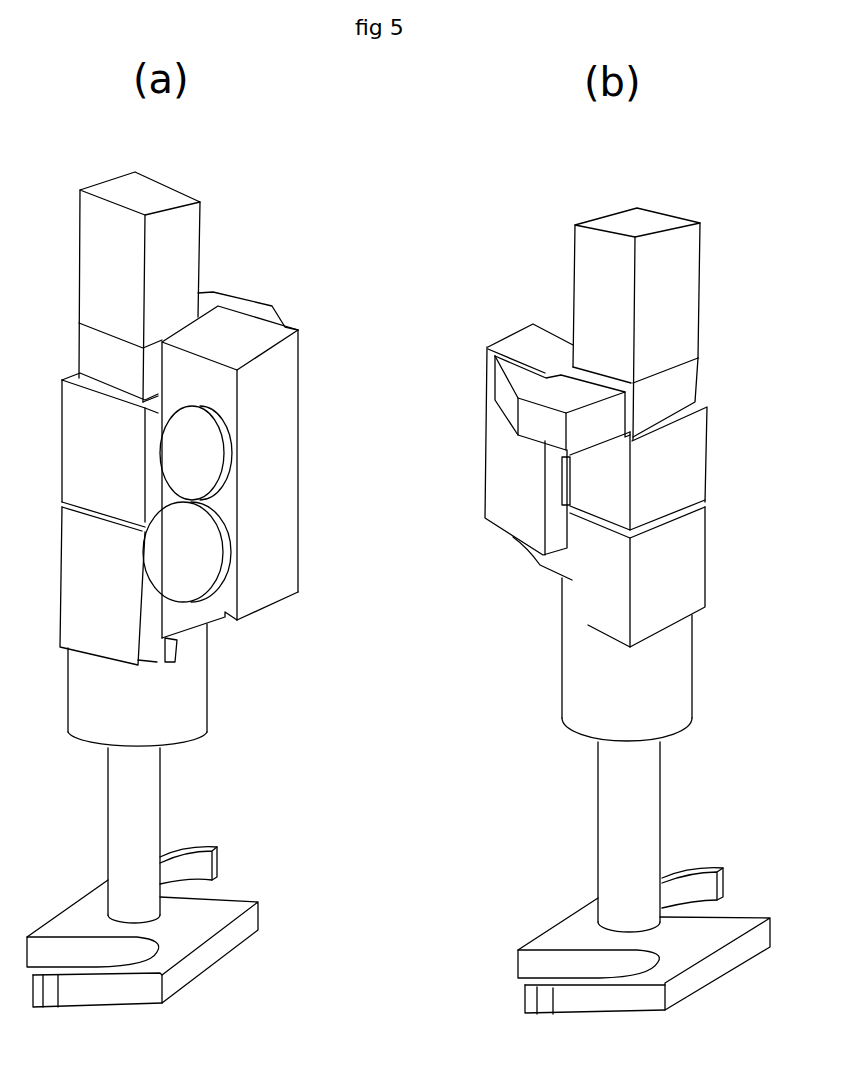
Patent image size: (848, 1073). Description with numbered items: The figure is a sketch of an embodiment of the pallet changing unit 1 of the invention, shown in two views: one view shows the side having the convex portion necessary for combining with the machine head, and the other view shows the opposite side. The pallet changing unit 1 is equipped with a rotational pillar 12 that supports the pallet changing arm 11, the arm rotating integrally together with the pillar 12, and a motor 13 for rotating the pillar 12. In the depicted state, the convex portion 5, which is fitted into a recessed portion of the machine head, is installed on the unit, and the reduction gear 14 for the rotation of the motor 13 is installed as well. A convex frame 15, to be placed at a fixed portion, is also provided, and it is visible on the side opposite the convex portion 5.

The pallet changing unit 1 is at (253, 715).
The convex portion 5 is at (187, 453).
The pallet changing arm 11 is at (217, 948).
The rotational pillar 12 is at (137, 810).
The motor 13 is at (178, 236).
The reduction gear 14 is at (275, 472).
The convex frame 15 is at (507, 533).